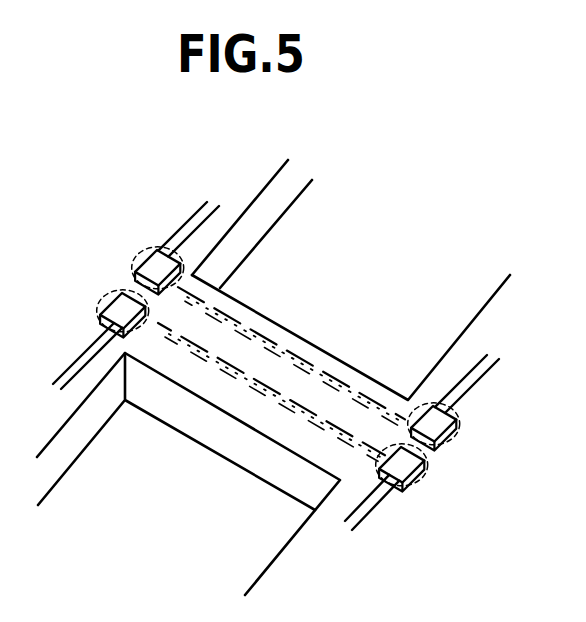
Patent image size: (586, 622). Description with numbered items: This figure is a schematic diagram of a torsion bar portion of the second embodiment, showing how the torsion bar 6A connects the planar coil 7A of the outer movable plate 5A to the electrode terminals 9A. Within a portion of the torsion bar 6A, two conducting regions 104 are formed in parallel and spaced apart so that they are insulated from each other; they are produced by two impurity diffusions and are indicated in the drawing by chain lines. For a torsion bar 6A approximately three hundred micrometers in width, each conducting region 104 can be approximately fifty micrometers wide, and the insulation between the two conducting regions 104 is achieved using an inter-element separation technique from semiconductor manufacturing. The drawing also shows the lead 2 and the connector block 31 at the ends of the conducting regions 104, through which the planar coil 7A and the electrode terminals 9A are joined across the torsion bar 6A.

The lead strip 2 is at (245, 185).
The outer movable plate 5A is at (483, 327).
The conducting regions 104 is at (312, 422).
The electrode terminals 9A is at (140, 258).
The connector block 31 is at (438, 440).
The planar coil 7A is at (473, 383).
The first torsion bar 6A is at (217, 437).